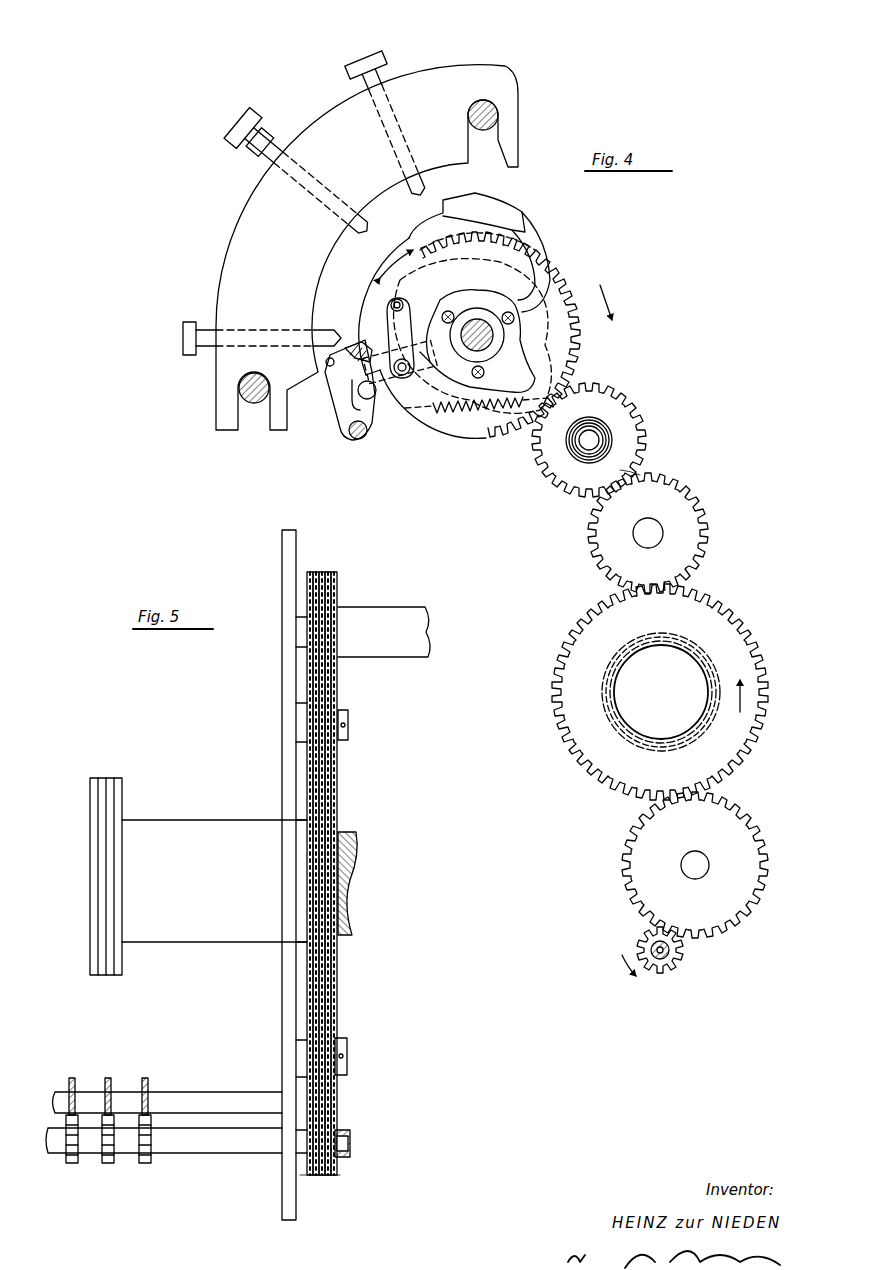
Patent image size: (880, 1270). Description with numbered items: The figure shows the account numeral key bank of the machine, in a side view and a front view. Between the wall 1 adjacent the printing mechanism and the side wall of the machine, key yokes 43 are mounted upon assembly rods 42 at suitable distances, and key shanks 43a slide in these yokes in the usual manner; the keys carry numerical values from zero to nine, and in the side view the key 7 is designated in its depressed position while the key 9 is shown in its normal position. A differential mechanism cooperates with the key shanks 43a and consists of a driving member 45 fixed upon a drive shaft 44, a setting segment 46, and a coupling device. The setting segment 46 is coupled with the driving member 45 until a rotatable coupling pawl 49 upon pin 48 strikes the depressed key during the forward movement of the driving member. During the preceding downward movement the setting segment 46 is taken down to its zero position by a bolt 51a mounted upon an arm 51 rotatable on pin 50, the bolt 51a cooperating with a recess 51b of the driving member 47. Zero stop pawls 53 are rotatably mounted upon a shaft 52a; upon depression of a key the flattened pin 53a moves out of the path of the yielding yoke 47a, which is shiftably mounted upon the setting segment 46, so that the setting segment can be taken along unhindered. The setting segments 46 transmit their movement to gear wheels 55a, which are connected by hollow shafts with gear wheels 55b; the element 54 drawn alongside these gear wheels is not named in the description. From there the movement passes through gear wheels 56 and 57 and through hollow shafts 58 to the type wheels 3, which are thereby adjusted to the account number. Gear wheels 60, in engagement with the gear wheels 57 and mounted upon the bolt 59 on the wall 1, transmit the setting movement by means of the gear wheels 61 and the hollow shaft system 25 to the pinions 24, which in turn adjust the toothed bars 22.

In FIG. 5, the wall 1 is at (285, 750).
In FIG. 5, the type wheels 3 is at (111, 782).
In FIG. 4, the key 7 is at (302, 175).
In FIG. 4, the key 9 is at (491, 186).
In FIG. 5, the toothed bars 22 is at (145, 1078).
In FIG. 4, the pinions 24 is at (666, 970).
In FIG. 5, the pinions 24 is at (145, 1165).
In FIG. 4, the hollow shaft system 25 is at (672, 951).
In FIG. 5, the hollow shaft system 25 is at (205, 1145).
In FIG. 4, the assembly rods 42 is at (498, 118).
In FIG. 4, the key yokes 43 is at (268, 190).
In FIG. 4, the key shanks 43a is at (372, 80).
In FIG. 4, the drive shaft 44 is at (495, 336).
In FIG. 4, the driving member 45 is at (540, 275).
In FIG. 4, the setting segment 46 is at (553, 360).
In FIG. 4, the driving member 47 is at (405, 375).
In FIG. 4, the yielding yoke 47a is at (354, 372).
In FIG. 4, the pin 48 is at (368, 400).
In FIG. 4, the coupling pawl 49 is at (357, 347).
In FIG. 4, the pin 50 is at (430, 410).
In FIG. 4, the arm 51 is at (404, 340).
In FIG. 4, the bolt 51a is at (399, 306).
In FIG. 4, the recess 51b is at (502, 240).
In FIG. 4, the shaft 52a is at (356, 436).
In FIG. 4, the zero stop pawls 53 is at (340, 407).
In FIG. 4, the flattened pin 53a is at (332, 368).
In FIG. 4, the gear / shaft 54 is at (595, 438).
In FIG. 5, the gear / shaft 54 is at (389, 652).
In FIG. 4, the gear wheels 55a is at (632, 455).
In FIG. 5, the gear wheels 55b is at (338, 592).
In FIG. 4, the gear wheels 56 is at (695, 531).
In FIG. 5, the gear wheels 56 is at (338, 772).
In FIG. 4, the gear wheels 57 is at (727, 638).
In FIG. 5, the gear wheels 57 is at (330, 822).
In FIG. 4, the hollow shafts 58 is at (708, 725).
In FIG. 5, the hollow shafts 58 is at (225, 830).
In FIG. 4, the bolt 59 is at (700, 866).
In FIG. 5, the bolt 59 is at (347, 1050).
In FIG. 4, the gear wheels 60 is at (730, 913).
In FIG. 5, the gear wheels 60 is at (338, 1090).
In FIG. 5, the gear wheels 61 is at (312, 1178).